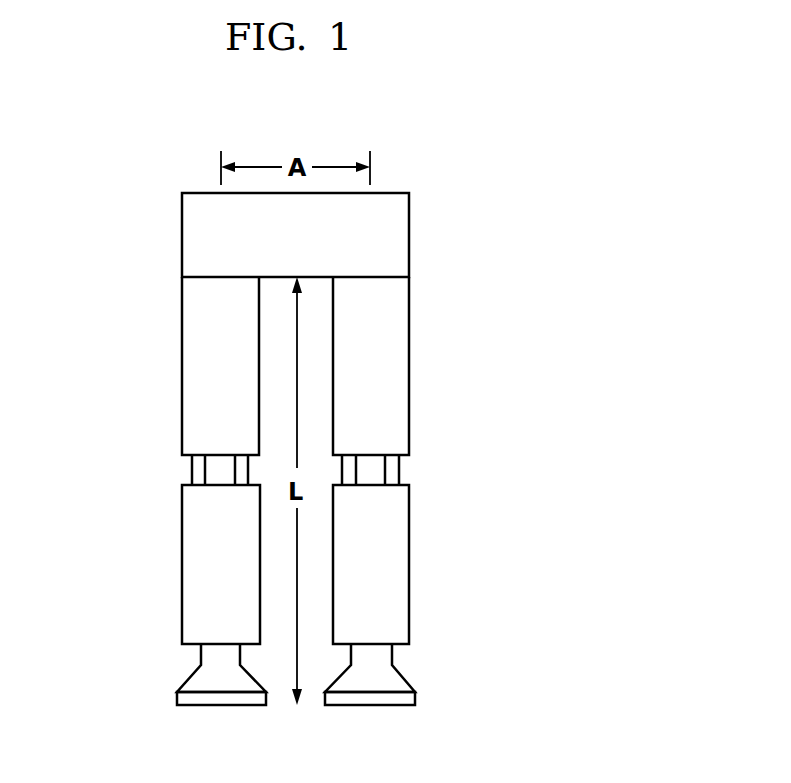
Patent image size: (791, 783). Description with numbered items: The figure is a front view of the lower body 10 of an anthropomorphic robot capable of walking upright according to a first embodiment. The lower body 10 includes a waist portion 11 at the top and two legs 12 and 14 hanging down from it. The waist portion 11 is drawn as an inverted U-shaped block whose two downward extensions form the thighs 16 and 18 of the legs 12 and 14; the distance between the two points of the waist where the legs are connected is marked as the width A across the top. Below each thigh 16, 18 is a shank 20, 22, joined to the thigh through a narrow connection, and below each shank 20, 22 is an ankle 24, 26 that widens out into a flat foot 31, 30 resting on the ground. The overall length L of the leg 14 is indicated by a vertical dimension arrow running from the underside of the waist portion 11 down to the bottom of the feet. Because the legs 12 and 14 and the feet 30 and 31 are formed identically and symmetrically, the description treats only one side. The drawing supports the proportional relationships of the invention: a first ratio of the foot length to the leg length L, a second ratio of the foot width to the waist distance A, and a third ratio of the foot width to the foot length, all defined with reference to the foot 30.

The lower body 10 is at (486, 168).
The waist portion 11 is at (168, 193).
The leg 12 is at (155, 467).
The leg 14 is at (435, 467).
The thigh 16 is at (182, 324).
The thigh 18 is at (409, 324).
The shank 20 is at (182, 563).
The shank 22 is at (409, 563).
The ankle 24 is at (201, 665).
The ankle 26 is at (392, 665).
The foot 30 is at (415, 697).
The foot 31 is at (177, 697).